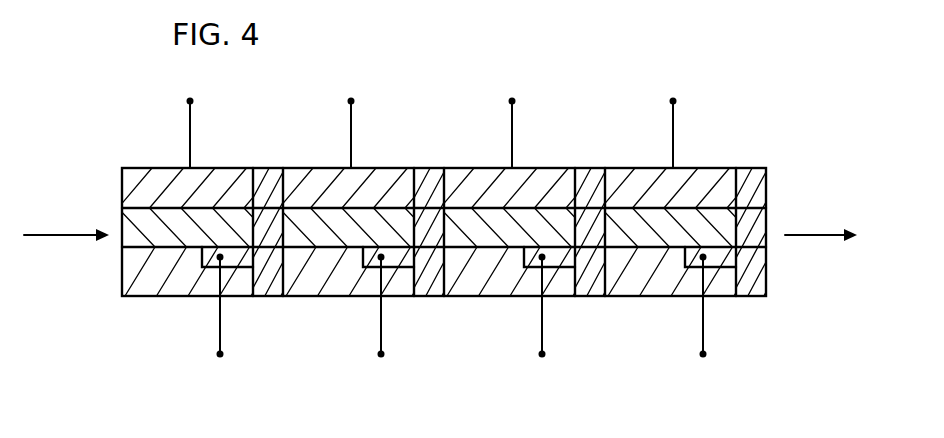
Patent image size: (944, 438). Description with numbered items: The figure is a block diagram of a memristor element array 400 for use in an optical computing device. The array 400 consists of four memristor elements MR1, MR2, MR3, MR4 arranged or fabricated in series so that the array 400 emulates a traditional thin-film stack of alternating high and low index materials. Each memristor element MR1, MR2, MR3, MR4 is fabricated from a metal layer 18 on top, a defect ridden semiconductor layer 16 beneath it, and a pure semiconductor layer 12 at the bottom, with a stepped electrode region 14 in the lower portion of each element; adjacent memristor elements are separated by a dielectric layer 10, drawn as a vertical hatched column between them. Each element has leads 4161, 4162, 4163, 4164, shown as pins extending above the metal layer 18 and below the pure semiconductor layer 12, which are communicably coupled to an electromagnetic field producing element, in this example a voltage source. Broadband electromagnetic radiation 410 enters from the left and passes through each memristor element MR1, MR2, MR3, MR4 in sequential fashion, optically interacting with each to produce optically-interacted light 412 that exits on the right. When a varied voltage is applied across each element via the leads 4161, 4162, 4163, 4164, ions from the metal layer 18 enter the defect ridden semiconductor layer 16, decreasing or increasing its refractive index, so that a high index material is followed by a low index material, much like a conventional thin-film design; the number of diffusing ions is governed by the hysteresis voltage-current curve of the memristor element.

The memristor element array 400 is at (646, 48).
The broadband electromagnetic radiation 410 is at (48, 237).
The optically-interacted light 412 is at (823, 233).
The lead 4161 is at (186, 105).
The lead 4162 is at (347, 105).
The lead 4163 is at (508, 105).
The lead 4164 is at (669, 105).
The dielectric layer 10 is at (270, 180).
The pure semiconductor layer 12 is at (148, 292).
The bottom electrode layer 14 is at (204, 256).
The defect ridden semiconductor layer 16 is at (138, 227).
The metal layer 18 is at (178, 188).
The memristor element MR1 is at (172, 296).
The memristor element MR2 is at (333, 296).
The memristor element MR3 is at (493, 296).
The memristor element MR4 is at (653, 296).